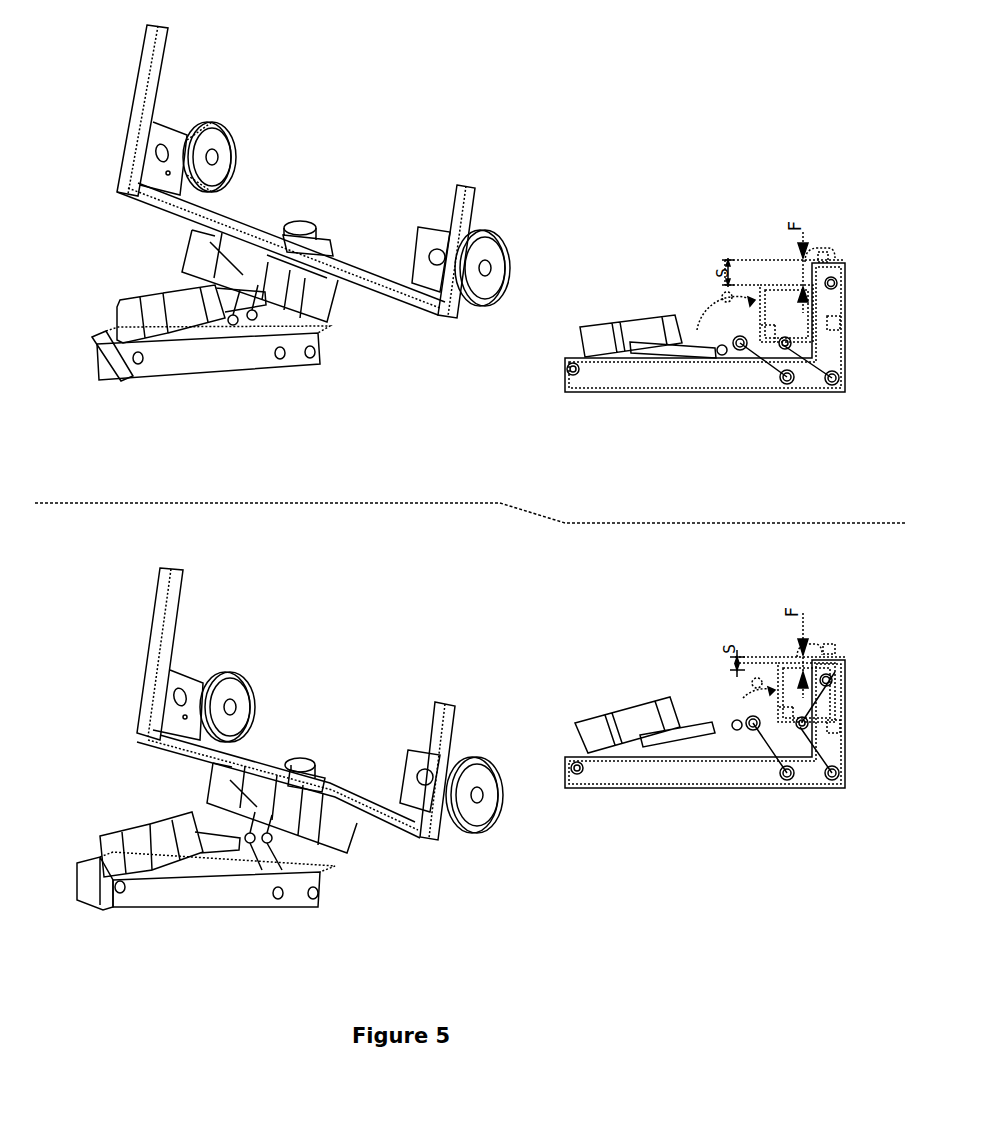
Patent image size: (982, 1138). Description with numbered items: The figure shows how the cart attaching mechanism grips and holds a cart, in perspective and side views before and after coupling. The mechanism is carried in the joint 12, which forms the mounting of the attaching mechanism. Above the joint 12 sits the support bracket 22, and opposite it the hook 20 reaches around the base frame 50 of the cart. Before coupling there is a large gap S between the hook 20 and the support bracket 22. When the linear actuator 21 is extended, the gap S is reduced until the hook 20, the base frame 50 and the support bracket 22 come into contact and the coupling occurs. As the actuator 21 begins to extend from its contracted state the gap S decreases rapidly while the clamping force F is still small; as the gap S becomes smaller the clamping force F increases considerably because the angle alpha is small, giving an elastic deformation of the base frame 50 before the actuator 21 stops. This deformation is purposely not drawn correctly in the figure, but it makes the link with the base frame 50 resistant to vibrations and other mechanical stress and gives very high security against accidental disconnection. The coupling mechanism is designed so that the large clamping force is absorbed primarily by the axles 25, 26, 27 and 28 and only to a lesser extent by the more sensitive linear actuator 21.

The joint 12 is at (198, 366).
The hook 20 is at (312, 218).
The linear actuator 21 is at (140, 298).
The support bracket 22 is at (200, 250).
The axle 25 is at (792, 345).
The axle 26 is at (830, 390).
The axle 27 is at (787, 384).
The axle 28 is at (727, 337).
The base frame 50 is at (447, 207).